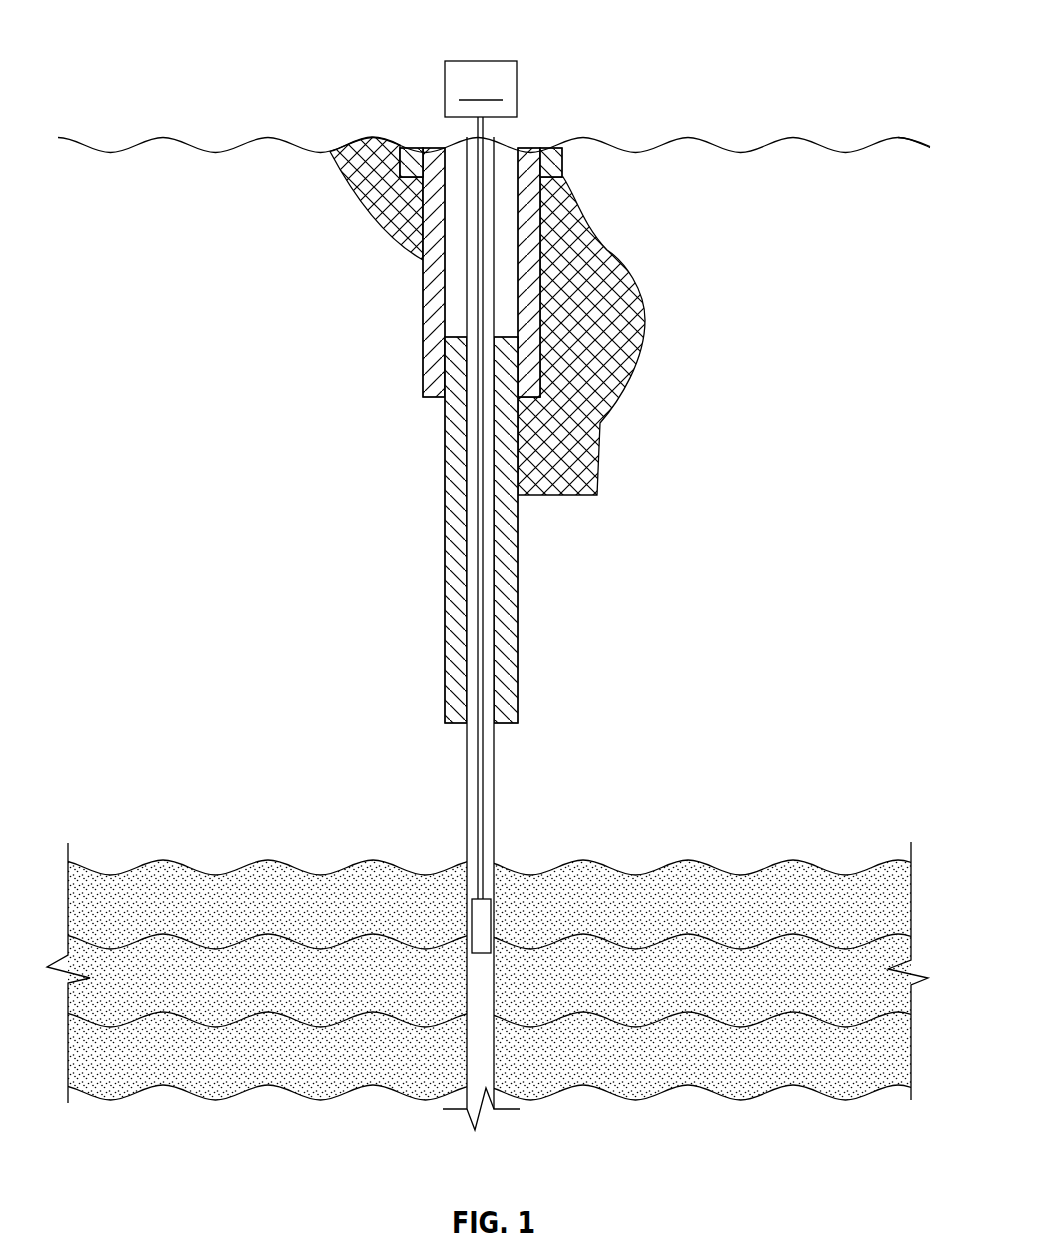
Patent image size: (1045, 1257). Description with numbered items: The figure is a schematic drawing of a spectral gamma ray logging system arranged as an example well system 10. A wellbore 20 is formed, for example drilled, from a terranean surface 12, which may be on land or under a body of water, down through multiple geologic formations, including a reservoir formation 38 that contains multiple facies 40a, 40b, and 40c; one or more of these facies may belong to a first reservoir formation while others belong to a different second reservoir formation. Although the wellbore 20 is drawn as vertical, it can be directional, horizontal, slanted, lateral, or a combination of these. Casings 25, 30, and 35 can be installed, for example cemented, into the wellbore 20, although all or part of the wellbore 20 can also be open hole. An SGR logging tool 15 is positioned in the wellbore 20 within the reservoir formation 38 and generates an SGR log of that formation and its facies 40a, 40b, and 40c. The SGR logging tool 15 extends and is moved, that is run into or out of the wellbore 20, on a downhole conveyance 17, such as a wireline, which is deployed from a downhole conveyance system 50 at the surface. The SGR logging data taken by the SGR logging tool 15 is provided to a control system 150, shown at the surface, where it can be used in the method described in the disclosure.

The well system 10 is at (118, 46).
The terranean surface 12 is at (858, 143).
The control system 150 is at (481, 89).
The downhole conveyance system 50 is at (480, 150).
The casing 25 is at (563, 157).
The casing 30 is at (423, 327).
The downhole conveyance 17 is at (485, 371).
The casing 35 is at (440, 593).
The wellbore 20 is at (496, 752).
The SGR logging tool 15 is at (484, 917).
The reservoir formation 38 is at (802, 846).
The facies 40a is at (758, 911).
The facies 40b is at (758, 991).
The facies 40c is at (758, 1064).